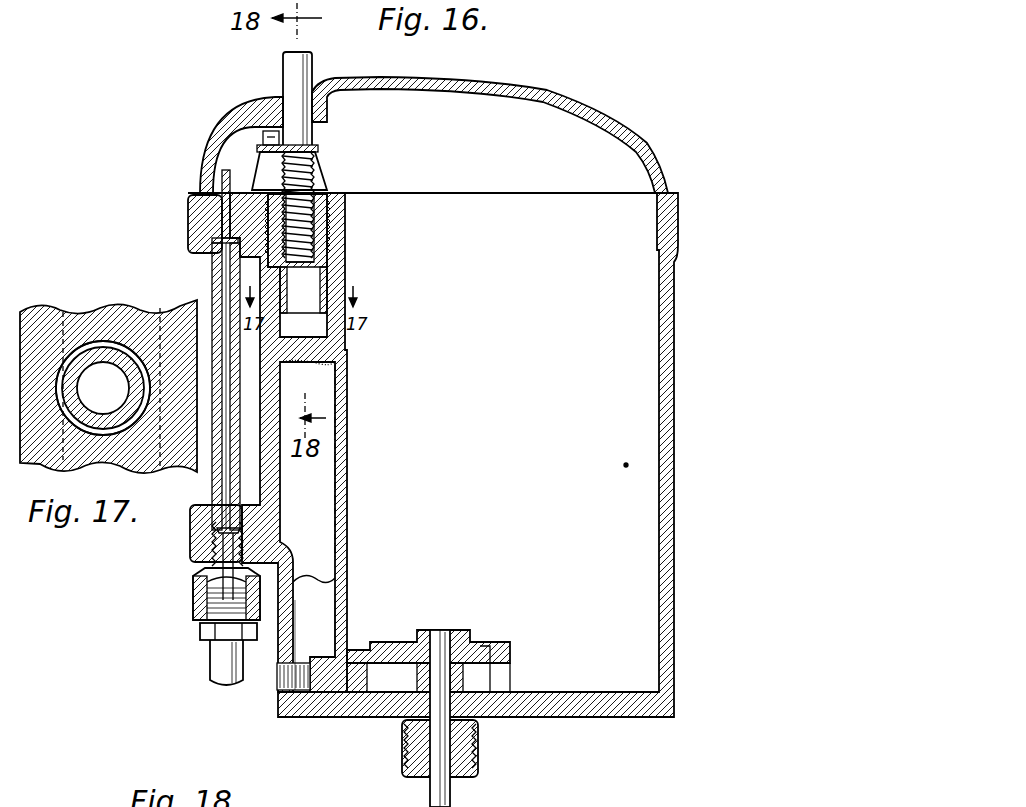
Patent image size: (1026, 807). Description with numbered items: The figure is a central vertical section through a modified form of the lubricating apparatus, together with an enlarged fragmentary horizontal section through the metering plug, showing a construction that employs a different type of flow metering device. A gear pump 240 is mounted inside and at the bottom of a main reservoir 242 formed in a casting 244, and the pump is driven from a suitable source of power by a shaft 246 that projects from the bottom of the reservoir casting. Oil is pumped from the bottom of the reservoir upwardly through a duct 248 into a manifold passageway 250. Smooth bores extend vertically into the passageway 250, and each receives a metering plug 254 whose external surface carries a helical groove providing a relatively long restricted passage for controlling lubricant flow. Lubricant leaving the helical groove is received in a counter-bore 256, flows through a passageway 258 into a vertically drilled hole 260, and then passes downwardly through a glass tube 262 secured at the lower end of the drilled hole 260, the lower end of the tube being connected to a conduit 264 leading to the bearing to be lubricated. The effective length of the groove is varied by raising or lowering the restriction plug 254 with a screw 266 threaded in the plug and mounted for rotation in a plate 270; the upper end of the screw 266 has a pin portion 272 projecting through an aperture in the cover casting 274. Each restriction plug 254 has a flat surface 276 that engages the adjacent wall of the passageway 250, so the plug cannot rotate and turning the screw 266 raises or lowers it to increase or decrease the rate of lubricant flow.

In FIG. 16, the gear pump 240 is at (460, 668).
In FIG. 16, the main reservoir 242 is at (628, 465).
In FIG. 16, the casting 244 is at (667, 500).
In FIG. 16, the shaft 246 is at (448, 787).
In FIG. 16, the duct 248 is at (320, 615).
In FIG. 16, the manifold passageway 250 is at (322, 327).
In FIG. 17, the manifold passageway 250 is at (108, 401).
In FIG. 16, the metering plug 254 is at (325, 193).
In FIG. 17, the metering plug 254 is at (120, 345).
In FIG. 16, the counter-bore 256 is at (330, 218).
In FIG. 16, the passageway 258 is at (233, 212).
In FIG. 16, the vertically drilled hole 260 is at (215, 215).
In FIG. 16, the glass tube 262 is at (215, 268).
In FIG. 16, the conduit 264 is at (222, 665).
In FIG. 16, the screw 266 is at (330, 158).
In FIG. 16, the plate 270 is at (255, 147).
In FIG. 16, the pin portion 272 is at (285, 68).
In FIG. 16, the cover casting 274 is at (443, 80).
In FIG. 16, the flat surface 276 is at (285, 297).
In FIG. 17, the flat surface 276 is at (82, 350).